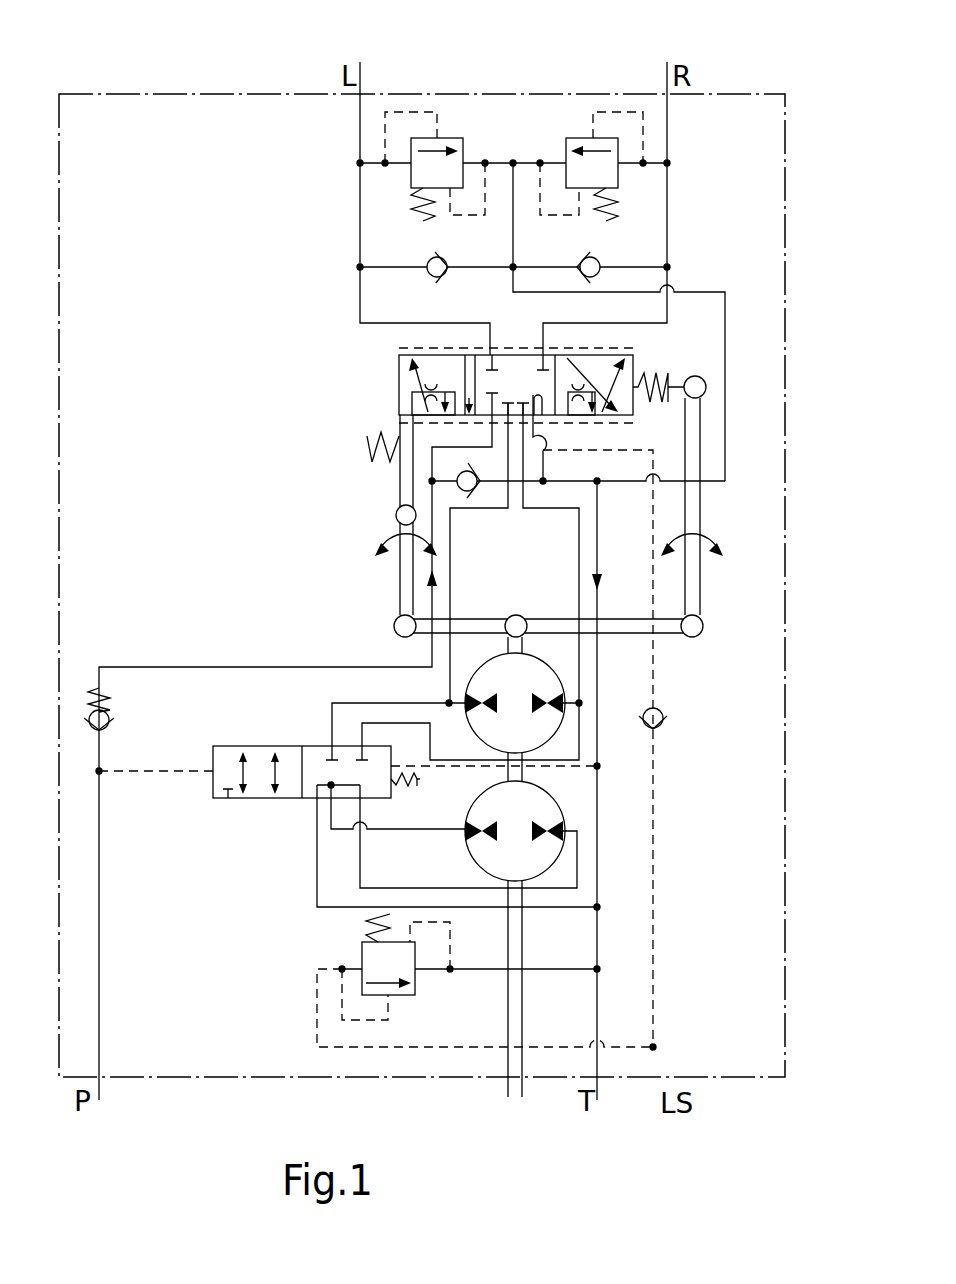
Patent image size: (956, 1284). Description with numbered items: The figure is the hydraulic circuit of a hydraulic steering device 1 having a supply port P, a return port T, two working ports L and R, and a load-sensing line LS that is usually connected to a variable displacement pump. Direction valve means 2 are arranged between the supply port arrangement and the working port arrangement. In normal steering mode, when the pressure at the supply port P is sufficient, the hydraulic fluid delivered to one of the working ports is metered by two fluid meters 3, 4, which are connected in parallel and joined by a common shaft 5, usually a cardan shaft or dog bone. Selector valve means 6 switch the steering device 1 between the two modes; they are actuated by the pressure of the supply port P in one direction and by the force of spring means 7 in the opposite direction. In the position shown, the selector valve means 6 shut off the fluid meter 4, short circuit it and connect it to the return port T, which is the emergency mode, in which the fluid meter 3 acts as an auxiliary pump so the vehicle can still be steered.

The hydraulic steering device 1 is at (818, 76).
The direction valve means 2 is at (335, 387).
The fluid meter 3 is at (543, 687).
The fluid meter 4 is at (542, 813).
The common shaft 5 is at (510, 773).
The selector valve means 6 is at (240, 818).
The spring means 7 is at (413, 785).